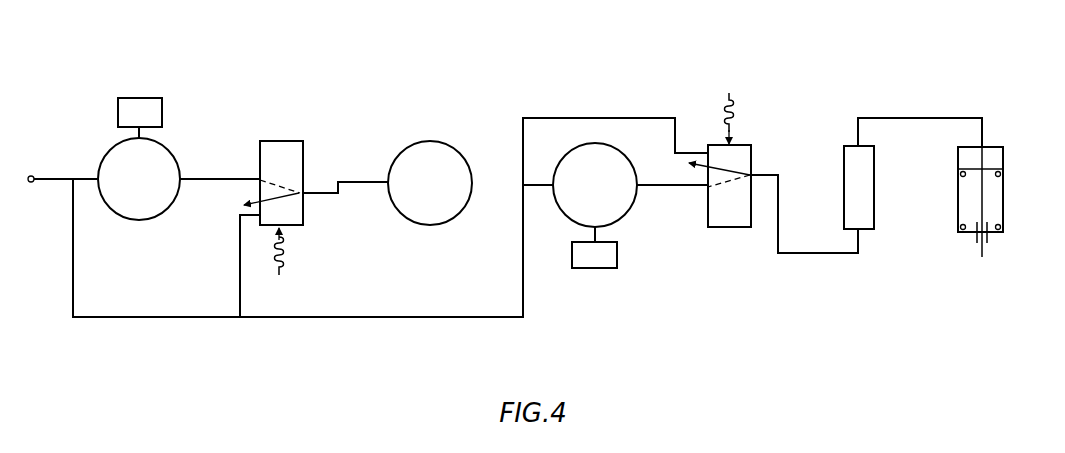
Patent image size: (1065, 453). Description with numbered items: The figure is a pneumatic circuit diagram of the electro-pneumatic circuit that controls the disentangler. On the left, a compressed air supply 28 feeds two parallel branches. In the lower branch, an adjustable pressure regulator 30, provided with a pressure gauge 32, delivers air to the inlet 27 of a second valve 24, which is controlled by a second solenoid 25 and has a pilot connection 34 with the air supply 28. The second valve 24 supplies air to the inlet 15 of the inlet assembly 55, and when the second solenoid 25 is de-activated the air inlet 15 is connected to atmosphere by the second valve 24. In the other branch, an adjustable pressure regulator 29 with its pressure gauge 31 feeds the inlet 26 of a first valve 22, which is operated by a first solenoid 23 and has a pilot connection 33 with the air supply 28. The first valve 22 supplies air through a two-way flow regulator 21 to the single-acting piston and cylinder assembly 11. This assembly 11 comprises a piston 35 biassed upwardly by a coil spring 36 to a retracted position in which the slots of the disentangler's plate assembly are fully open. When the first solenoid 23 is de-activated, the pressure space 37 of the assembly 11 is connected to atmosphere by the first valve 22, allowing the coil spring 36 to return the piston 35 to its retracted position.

The single-acting piston and cylinder assembly 11 is at (993, 146).
The inlet 15 is at (378, 184).
The two-way flow regulator 21 is at (866, 150).
The first valve 22 is at (743, 140).
The first solenoid 23 is at (727, 119).
The second valve 24 is at (280, 148).
The second solenoid 25 is at (286, 255).
The inlet of first valve 26 is at (697, 190).
The inlet of second valve 27 is at (244, 179).
The compressed air supply 28 is at (37, 174).
The adjustable pressure regulator 29 is at (602, 143).
The adjustable pressure regulator 30 is at (144, 202).
The pressure gauge 31 is at (590, 262).
The pressure gauge 32 is at (138, 112).
The pilot connection 33 is at (648, 118).
The pilot connection 34 is at (240, 260).
The piston 35 is at (990, 168).
The coil spring 36 is at (1001, 227).
The pressure space 37 is at (968, 160).
The inlet assembly 55 is at (440, 145).